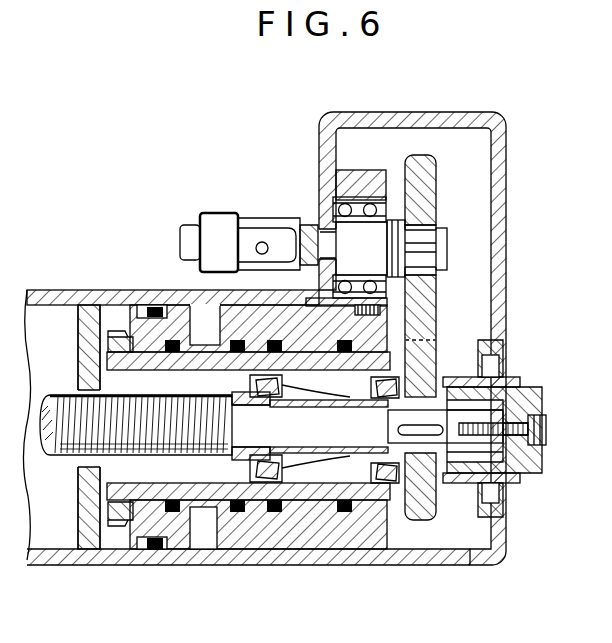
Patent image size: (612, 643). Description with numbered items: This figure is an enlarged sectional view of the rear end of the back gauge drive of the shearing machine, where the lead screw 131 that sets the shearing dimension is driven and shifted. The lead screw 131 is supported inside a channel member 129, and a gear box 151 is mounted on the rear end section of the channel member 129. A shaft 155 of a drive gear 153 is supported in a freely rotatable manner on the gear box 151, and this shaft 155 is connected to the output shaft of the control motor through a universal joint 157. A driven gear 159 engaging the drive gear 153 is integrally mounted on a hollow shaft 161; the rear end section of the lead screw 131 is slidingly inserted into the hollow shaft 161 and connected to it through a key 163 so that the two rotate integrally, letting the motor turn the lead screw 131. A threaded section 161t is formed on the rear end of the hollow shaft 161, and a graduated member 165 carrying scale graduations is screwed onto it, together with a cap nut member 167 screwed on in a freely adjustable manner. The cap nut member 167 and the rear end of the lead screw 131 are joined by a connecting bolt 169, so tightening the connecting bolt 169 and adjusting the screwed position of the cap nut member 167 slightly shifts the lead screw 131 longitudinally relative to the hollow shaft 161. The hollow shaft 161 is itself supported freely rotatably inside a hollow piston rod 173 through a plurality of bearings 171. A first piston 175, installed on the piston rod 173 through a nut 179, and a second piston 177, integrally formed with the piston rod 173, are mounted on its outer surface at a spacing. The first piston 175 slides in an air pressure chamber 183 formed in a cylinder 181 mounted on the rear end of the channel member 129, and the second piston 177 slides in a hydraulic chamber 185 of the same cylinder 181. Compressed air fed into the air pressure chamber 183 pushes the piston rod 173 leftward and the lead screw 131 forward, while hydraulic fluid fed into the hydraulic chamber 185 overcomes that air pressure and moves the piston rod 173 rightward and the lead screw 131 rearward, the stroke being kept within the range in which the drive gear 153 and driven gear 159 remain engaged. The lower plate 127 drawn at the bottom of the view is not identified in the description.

The lower housing plate 127 is at (52, 562).
The channel member 129 is at (45, 297).
The lead screw 131 is at (63, 409).
The gear box 151 is at (506, 140).
The drive gear 153 is at (439, 180).
The shaft 155 is at (346, 243).
The universal joint 157 is at (262, 222).
The driven gear 159 is at (421, 520).
The hollow shaft 161 is at (406, 455).
The threaded section 161t is at (509, 378).
The key 163 is at (416, 430).
The graduated member 165 is at (520, 480).
The cap nut member 167 is at (543, 455).
The connecting bolt 169 is at (546, 430).
The bearings 171 is at (322, 400).
The hollow piston rod 173 is at (318, 503).
The first piston 175 is at (125, 295).
The second piston 177 is at (307, 342).
The nut 179 is at (108, 512).
The cylinder 181 is at (241, 552).
The air pressure chamber 183 is at (203, 538).
The hydraulic chamber 185 is at (307, 545).